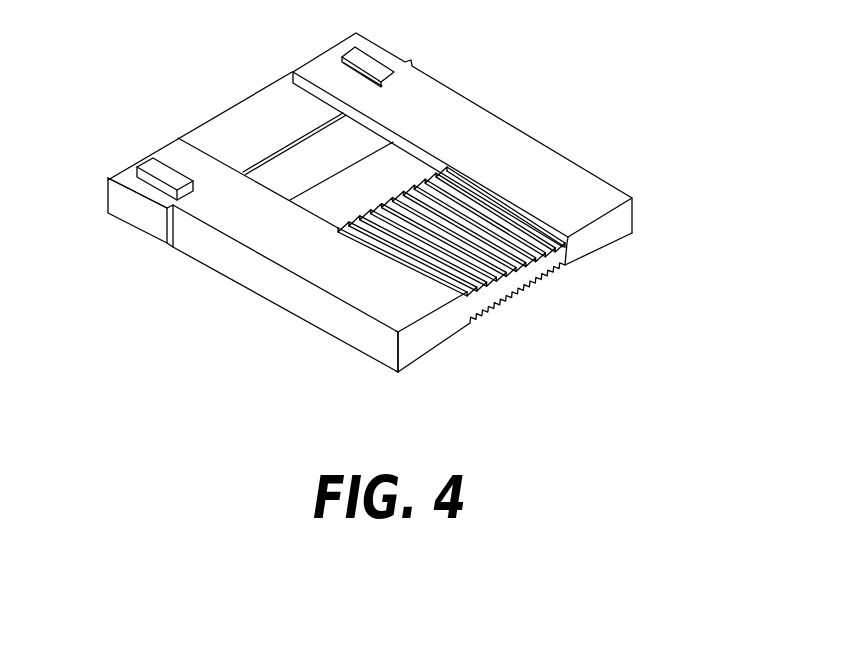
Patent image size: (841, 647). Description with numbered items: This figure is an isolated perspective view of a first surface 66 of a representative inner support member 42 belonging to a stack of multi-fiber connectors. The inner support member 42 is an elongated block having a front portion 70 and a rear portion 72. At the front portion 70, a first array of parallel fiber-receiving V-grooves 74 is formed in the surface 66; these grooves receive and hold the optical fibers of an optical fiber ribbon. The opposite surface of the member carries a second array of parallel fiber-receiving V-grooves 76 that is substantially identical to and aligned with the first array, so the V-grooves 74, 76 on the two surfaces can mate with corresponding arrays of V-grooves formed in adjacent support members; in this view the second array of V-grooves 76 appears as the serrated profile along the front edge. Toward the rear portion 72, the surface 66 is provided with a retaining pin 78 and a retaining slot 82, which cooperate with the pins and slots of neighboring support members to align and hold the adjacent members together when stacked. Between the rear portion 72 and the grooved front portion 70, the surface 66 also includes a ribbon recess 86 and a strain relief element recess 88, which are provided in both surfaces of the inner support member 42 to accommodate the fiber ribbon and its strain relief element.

The inner support member 42 is at (153, 82).
The surface 66 is at (472, 137).
The front portion 70 is at (389, 337).
The rear portion 72 is at (190, 261).
The first array of parallel fiber-receiving V-grooves 74 is at (566, 247).
The second array of parallel fiber-receiving V-grooves 76 is at (507, 310).
The retaining pin 78 is at (153, 166).
The retaining slot 82 is at (370, 71).
The ribbon recess 86 is at (245, 149).
The strain relief element recess 88 is at (320, 158).